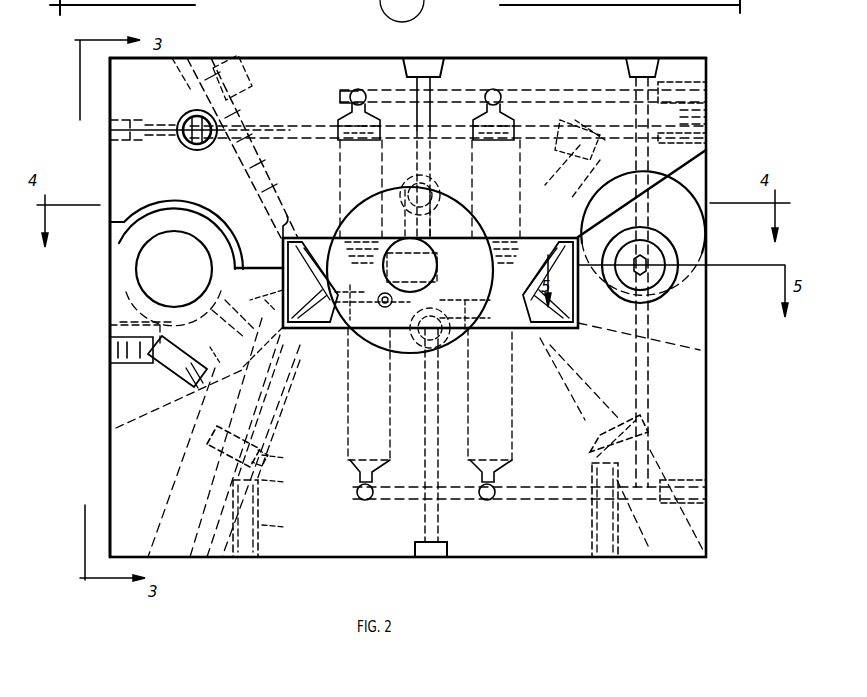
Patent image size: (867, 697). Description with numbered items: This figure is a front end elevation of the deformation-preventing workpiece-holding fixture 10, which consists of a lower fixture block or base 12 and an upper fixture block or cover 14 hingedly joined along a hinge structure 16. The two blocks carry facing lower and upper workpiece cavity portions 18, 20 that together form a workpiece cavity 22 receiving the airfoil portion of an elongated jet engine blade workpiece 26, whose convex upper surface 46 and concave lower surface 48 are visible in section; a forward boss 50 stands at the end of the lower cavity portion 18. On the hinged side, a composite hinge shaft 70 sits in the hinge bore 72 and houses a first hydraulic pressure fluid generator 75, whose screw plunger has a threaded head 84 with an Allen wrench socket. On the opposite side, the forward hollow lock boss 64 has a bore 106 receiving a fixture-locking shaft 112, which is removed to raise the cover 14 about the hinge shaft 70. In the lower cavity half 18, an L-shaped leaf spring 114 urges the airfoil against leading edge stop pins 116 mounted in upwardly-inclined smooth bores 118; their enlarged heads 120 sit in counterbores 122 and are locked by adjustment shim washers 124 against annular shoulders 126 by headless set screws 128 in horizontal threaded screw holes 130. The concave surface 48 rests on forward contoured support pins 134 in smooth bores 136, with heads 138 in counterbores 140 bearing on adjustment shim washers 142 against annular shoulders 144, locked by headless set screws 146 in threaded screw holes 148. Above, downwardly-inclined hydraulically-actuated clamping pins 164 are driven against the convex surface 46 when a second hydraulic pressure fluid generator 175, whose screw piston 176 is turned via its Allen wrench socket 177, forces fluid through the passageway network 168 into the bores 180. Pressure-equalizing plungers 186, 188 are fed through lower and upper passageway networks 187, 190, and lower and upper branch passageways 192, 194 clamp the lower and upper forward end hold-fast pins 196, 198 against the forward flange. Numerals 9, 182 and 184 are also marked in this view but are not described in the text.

The passage 9 is at (179, 400).
The deformation-preventing workpiece-holding fixture 10 is at (240, 47).
The lower fixture block 12 is at (103, 460).
The upper fixture block 14 is at (294, 55).
The hinge structure 16 is at (693, 205).
The lower workpiece cavity portion 18 is at (262, 347).
The upper workpiece cavity portion 20 is at (283, 248).
The workpiece cavity 22 is at (282, 236).
The workpiece 26 is at (470, 220).
The convex upper surface 46 is at (450, 250).
The concave lower surface 48 is at (426, 319).
The forward boss 50 is at (465, 310).
The forward hollow lock boss 64 is at (130, 256).
The composite hinge shaft 70 is at (655, 292).
The hinge bore 72 is at (372, 294).
The first hydraulic pressure fluid generator 75 is at (675, 255).
The threaded head 84 is at (665, 290).
The lock boss bore 106 is at (145, 245).
The fixture-locking shaft 112 is at (148, 276).
The L-shaped leaf spring 114 is at (570, 337).
The leading edge stop pins 116 is at (255, 412).
The upwardly-inclined smooth bores 118 is at (260, 293).
The enlarged heads 120 is at (217, 437).
The counterbores 122 is at (128, 440).
The adjustment shim washers 124 is at (188, 372).
The annular shoulders 126 is at (215, 322).
The headless set screws 128 is at (112, 350).
The horizontal threaded screw holes 130 is at (118, 325).
The forward contoured support pins 134 is at (594, 438).
The smooth bores 136 is at (292, 385).
The heads 138 is at (288, 482).
The counterbores 140 is at (176, 502).
The adjustment shim washers 142 is at (288, 458).
The annular shoulders 144 is at (217, 446).
The headless set screws 146 is at (245, 560).
The threaded screw holes 148 is at (288, 528).
The hydraulically-actuated clamping pins 164 is at (288, 172).
The passageway network 168 is at (540, 118).
The second hydraulic pressure fluid generator 175 is at (163, 120).
The screw piston 176 is at (196, 110).
The Allen wrench socket 177 is at (182, 144).
The bores 180 is at (640, 162).
The passage 182 is at (440, 436).
The passage 184 is at (500, 165).
The pressure-equalizing plungers 186 is at (500, 400).
The lower passageway network 187 is at (540, 498).
The pressure-equalizing plungers 188 is at (518, 160).
The upper passageway network 190 is at (458, 85).
The lower branch passageway 192 is at (432, 478).
The upper branch passageway 194 is at (436, 118).
The lower forward end hold-fast pin 196 is at (468, 355).
The upper forward end hold-fast pin 198 is at (462, 200).